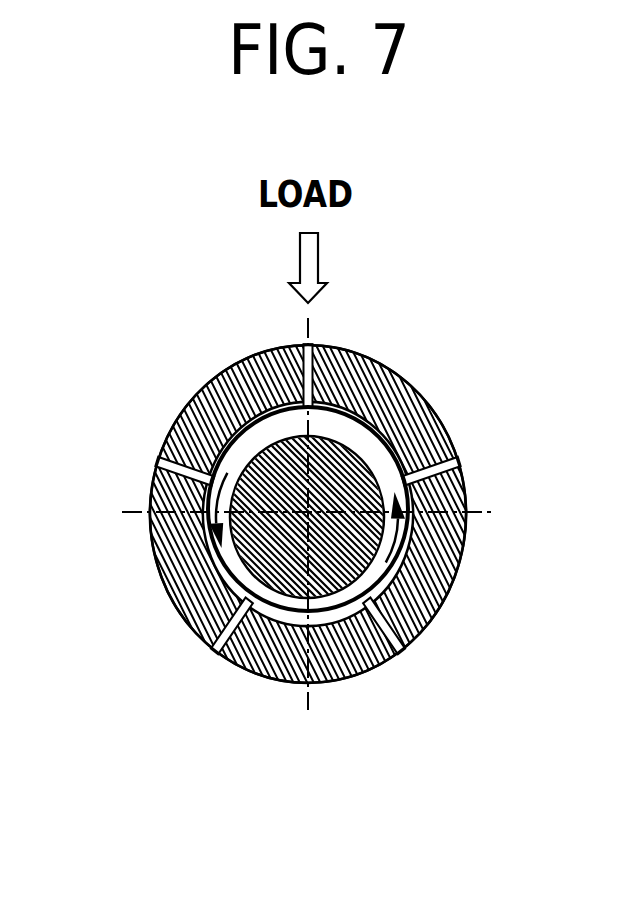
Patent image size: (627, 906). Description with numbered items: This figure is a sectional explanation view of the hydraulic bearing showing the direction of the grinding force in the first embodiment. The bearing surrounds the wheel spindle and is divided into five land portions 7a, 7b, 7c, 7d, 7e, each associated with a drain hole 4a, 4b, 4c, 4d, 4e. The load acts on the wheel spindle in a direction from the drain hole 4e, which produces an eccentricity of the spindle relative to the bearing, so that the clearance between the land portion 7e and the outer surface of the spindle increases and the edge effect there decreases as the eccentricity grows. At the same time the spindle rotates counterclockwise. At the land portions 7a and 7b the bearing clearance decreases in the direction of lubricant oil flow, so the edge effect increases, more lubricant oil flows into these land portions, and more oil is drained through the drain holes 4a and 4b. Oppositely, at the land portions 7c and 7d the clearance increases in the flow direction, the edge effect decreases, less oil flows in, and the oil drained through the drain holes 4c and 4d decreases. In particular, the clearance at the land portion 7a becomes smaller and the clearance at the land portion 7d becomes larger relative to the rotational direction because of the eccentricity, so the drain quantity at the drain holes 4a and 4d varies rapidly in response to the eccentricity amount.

The land portion 7a is at (187, 403).
The land portion 7b is at (182, 617).
The land portion 7c is at (442, 612).
The land portion 7d is at (465, 495).
The land portion 7e is at (336, 404).
The drain hole 4a is at (157, 453).
The drain hole 4b is at (213, 652).
The drain hole 4c is at (395, 652).
The drain hole 4d is at (455, 447).
The drain hole 4e is at (312, 360).